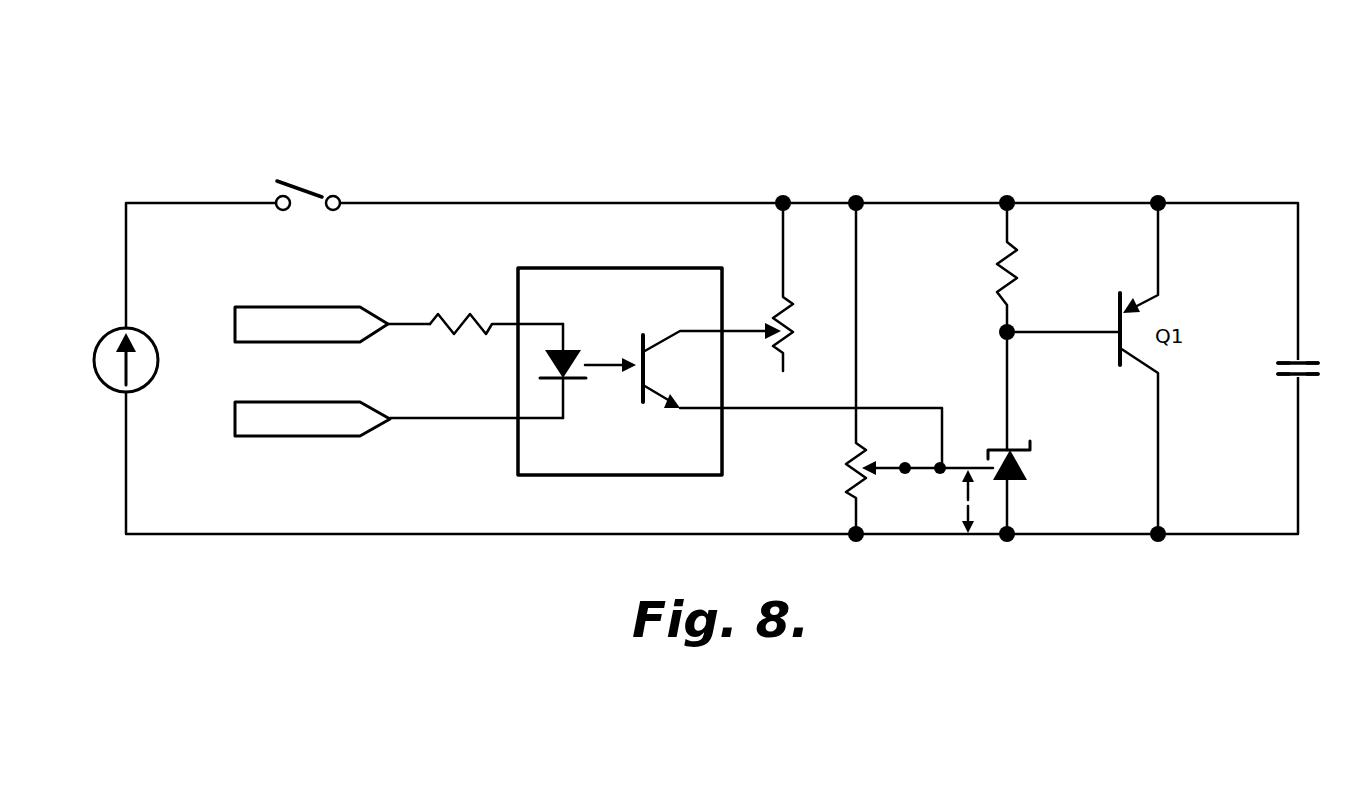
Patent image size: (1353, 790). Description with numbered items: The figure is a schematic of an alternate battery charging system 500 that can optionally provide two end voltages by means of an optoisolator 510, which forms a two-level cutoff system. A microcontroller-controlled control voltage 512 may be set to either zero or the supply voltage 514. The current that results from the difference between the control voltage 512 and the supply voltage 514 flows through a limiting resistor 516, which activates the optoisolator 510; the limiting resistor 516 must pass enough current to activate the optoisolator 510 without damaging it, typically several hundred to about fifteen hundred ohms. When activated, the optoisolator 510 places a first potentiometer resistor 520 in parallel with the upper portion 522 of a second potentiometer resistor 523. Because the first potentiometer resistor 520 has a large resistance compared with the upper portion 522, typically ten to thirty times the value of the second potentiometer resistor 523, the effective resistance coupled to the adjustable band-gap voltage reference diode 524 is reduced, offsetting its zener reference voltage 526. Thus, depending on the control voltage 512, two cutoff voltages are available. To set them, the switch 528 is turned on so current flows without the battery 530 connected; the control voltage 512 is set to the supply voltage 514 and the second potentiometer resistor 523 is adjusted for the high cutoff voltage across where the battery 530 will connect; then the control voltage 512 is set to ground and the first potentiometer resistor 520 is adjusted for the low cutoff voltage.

The battery charging system 500 is at (253, 122).
The switch S1 528 is at (325, 196).
The voltage Vcc 514 is at (314, 306).
The limiting resistor R4 516 is at (431, 322).
The Control 1 voltage 512 is at (309, 437).
The optoisolator U50 510 is at (642, 476).
The potentiometer resistor R3 520 is at (781, 299).
The upper portion of potentiometer resistor R2 522 is at (878, 452).
The potentiometer resistor R2 523 is at (858, 456).
The zener reference voltage VREF 526 is at (946, 512).
The adjustable band-gap voltage reference diode U1 524 is at (1018, 448).
The battery B1 530 is at (1292, 360).